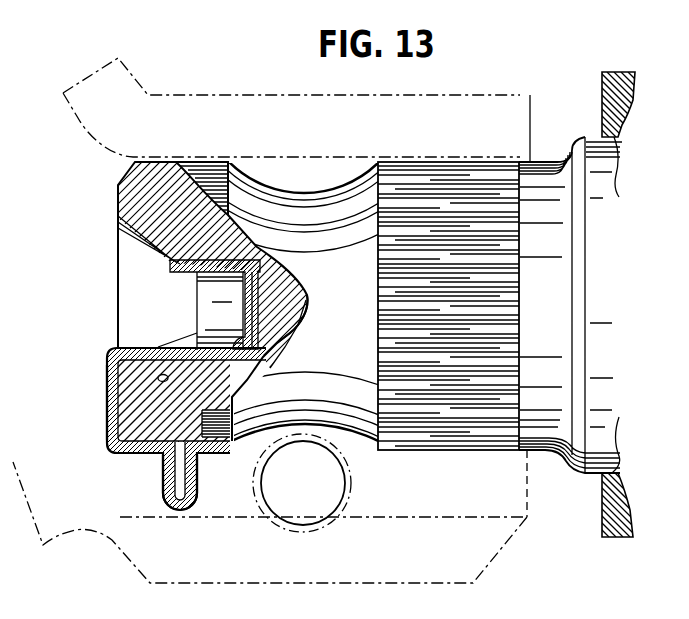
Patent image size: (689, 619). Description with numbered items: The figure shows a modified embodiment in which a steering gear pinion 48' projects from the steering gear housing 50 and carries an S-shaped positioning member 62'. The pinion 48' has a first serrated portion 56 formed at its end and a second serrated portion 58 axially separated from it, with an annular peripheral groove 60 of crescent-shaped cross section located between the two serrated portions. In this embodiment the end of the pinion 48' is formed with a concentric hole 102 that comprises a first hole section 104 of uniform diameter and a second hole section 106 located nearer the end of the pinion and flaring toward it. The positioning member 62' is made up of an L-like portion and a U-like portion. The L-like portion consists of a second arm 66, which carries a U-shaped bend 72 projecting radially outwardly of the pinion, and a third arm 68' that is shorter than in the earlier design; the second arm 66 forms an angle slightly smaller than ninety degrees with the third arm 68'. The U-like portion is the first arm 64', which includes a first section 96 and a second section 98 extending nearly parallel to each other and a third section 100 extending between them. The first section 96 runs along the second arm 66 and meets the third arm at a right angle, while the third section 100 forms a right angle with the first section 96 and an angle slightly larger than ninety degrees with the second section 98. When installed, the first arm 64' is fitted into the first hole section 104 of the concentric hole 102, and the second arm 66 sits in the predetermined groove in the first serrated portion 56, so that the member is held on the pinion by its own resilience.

The steering gear pinion 48' is at (287, 320).
The steering gear housing 50 is at (616, 78).
The first serrated portion 56 is at (209, 166).
The second serrated portion 58 is at (452, 437).
The annular peripheral groove 60 is at (302, 428).
The positioning member 62' is at (267, 385).
The first arm 64' is at (175, 358).
The second arm 66 is at (143, 457).
The third arm 68' is at (77, 402).
The U-shaped bend 72 is at (187, 505).
The first section 96 is at (179, 344).
The second section 98 is at (163, 265).
The third section 100 is at (262, 285).
The concentric hole 102 is at (290, 318).
The first hole section 104 is at (258, 384).
The second hole section 106 is at (168, 379).